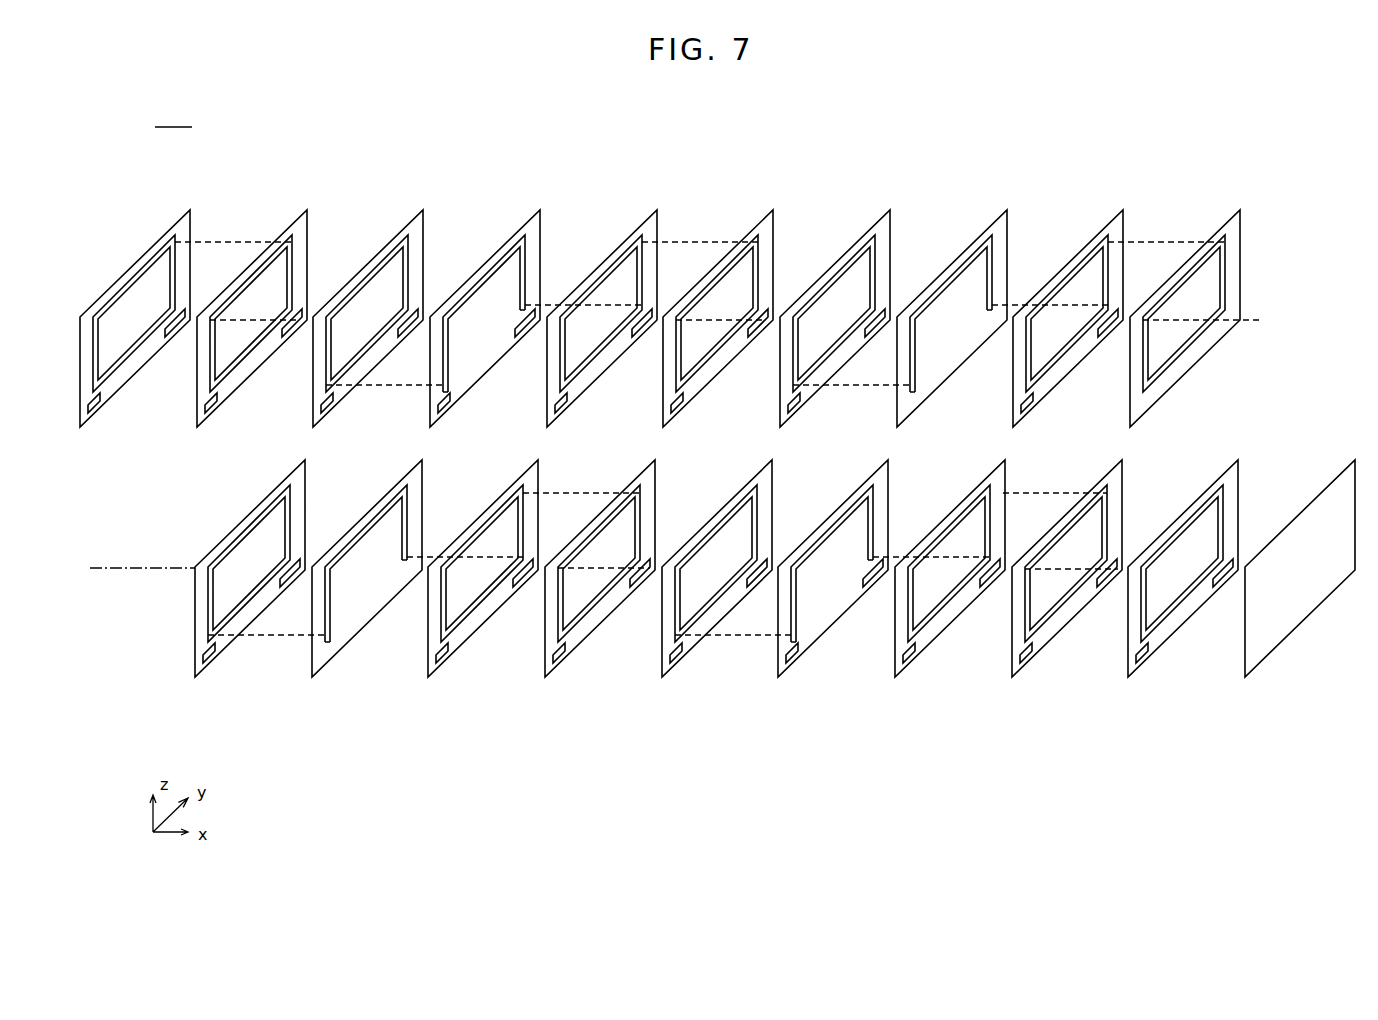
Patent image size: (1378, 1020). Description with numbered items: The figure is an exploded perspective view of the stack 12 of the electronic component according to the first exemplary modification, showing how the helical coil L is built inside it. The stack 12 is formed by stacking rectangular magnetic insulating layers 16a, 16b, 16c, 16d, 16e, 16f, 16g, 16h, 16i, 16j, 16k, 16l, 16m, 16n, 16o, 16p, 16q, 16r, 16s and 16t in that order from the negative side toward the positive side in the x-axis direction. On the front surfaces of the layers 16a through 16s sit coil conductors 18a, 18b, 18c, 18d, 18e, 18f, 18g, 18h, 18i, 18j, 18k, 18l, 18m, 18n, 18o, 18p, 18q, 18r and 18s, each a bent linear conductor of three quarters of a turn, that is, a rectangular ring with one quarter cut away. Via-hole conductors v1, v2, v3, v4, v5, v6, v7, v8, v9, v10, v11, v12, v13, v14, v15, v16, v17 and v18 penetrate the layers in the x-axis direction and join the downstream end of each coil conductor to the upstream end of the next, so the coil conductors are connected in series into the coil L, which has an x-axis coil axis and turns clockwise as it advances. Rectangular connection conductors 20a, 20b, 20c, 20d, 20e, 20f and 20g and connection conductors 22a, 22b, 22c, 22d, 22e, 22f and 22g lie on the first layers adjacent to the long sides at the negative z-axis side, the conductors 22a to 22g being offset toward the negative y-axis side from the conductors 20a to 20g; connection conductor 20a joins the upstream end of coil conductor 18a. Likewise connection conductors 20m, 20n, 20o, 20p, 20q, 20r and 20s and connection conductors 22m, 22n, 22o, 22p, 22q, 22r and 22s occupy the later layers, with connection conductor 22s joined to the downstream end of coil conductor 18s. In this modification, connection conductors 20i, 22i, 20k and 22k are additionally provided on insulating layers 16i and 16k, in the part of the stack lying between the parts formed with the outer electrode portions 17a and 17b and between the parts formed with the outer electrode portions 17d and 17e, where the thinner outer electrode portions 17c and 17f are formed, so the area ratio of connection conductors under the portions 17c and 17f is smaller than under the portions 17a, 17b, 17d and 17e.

The stack 12 is at (173, 114).
The coil L is at (737, 200).
The insulating layer 16a is at (190, 210).
The insulating layer 16b is at (307, 210).
The insulating layer 16c is at (423, 210).
The insulating layer 16d is at (540, 210).
The insulating layer 16e is at (657, 210).
The insulating layer 16f is at (773, 210).
The insulating layer 16g is at (890, 210).
The insulating layer 16h is at (1007, 210).
The insulating layer 16i is at (1123, 210).
The insulating layer 16j is at (1240, 210).
The insulating layer 16k is at (195, 677).
The insulating layer 16l is at (312, 677).
The insulating layer 16m is at (428, 677).
The insulating layer 16n is at (545, 677).
The insulating layer 16o is at (662, 677).
The insulating layer 16p is at (778, 677).
The insulating layer 16q is at (895, 677).
The insulating layer 16r is at (1012, 677).
The insulating layer 16s is at (1128, 677).
The insulating layer 16t is at (1245, 677).
The outer electrode portion 17a is at (435, 280).
The outer electrode portion 17b is at (815, 494).
The outer electrode portion 17c is at (1026, 280).
The outer electrode portion 17d is at (511, 405).
The outer electrode portion 17e is at (737, 668).
The outer electrode portion 17f is at (981, 403).
The coil conductor 18a is at (140, 269).
The coil conductor 18b is at (254, 350).
The coil conductor 18c is at (370, 350).
The coil conductor 18d is at (474, 289).
The coil conductor 18e is at (604, 350).
The coil conductor 18f is at (720, 350).
The coil conductor 18g is at (828, 282).
The coil conductor 18h is at (941, 289).
The coil conductor 18i is at (1070, 350).
The coil conductor 18j is at (1183, 350).
The coil conductor 18k is at (252, 523).
The coil conductor 18l is at (369, 523).
The coil conductor 18m is at (485, 523).
The coil conductor 18n is at (602, 600).
The coil conductor 18o is at (719, 523).
The coil conductor 18p is at (828, 533).
The coil conductor 18q is at (952, 523).
The coil conductor 18r is at (1069, 600).
The coil conductor 18s is at (1185, 600).
The connection conductor 20a is at (173, 338).
The connection conductor 20b is at (290, 338).
The connection conductor 20c is at (406, 338).
The connection conductor 20d is at (523, 338).
The connection conductor 20e is at (640, 338).
The connection conductor 20f is at (756, 338).
The connection conductor 20g is at (873, 338).
The connection conductor 20i is at (1106, 338).
The connection conductor 20k is at (288, 588).
The connection conductor 20m is at (521, 588).
The connection conductor 20n is at (638, 588).
The connection conductor 20o is at (766, 563).
The connection conductor 20p is at (871, 588).
The connection conductor 20q is at (988, 588).
The connection conductor 20r is at (1105, 588).
The connection conductor 20s is at (1221, 588).
The connection conductor 22a is at (95, 414).
The connection conductor 22b is at (212, 414).
The connection conductor 22c is at (328, 414).
The connection conductor 22d is at (445, 414).
The connection conductor 22e is at (562, 414).
The connection conductor 22f is at (678, 414).
The connection conductor 22g is at (795, 414).
The connection conductor 22i is at (1028, 414).
The connection conductor 22k is at (212, 664).
The connection conductor 22m is at (445, 664).
The connection conductor 22n is at (562, 664).
The connection conductor 22o is at (679, 664).
The connection conductor 22p is at (795, 664).
The connection conductor 22q is at (912, 664).
The connection conductor 22r is at (1029, 664).
The connection conductor 22s is at (1145, 664).
The via-hole conductor v1 is at (237, 244).
The via-hole conductor v2 is at (238, 318).
The via-hole conductor v3 is at (402, 387).
The via-hole conductor v4 is at (603, 306).
The via-hole conductor v5 is at (703, 247).
The via-hole conductor v6 is at (704, 318).
The via-hole conductor v7 is at (852, 387).
The via-hole conductor v8 is at (1072, 306).
The via-hole conductor v9 is at (1175, 244).
The via-hole conductor v10 is at (1263, 322).
The via-hole conductor v11 is at (265, 637).
The via-hole conductor v12 is at (502, 558).
The via-hole conductor v13 is at (580, 492).
The via-hole conductor v14 is at (573, 568).
The via-hole conductor v15 is at (718, 634).
The via-hole conductor v16 is at (947, 557).
The via-hole conductor v17 is at (1035, 493).
The via-hole conductor v18 is at (1038, 569).